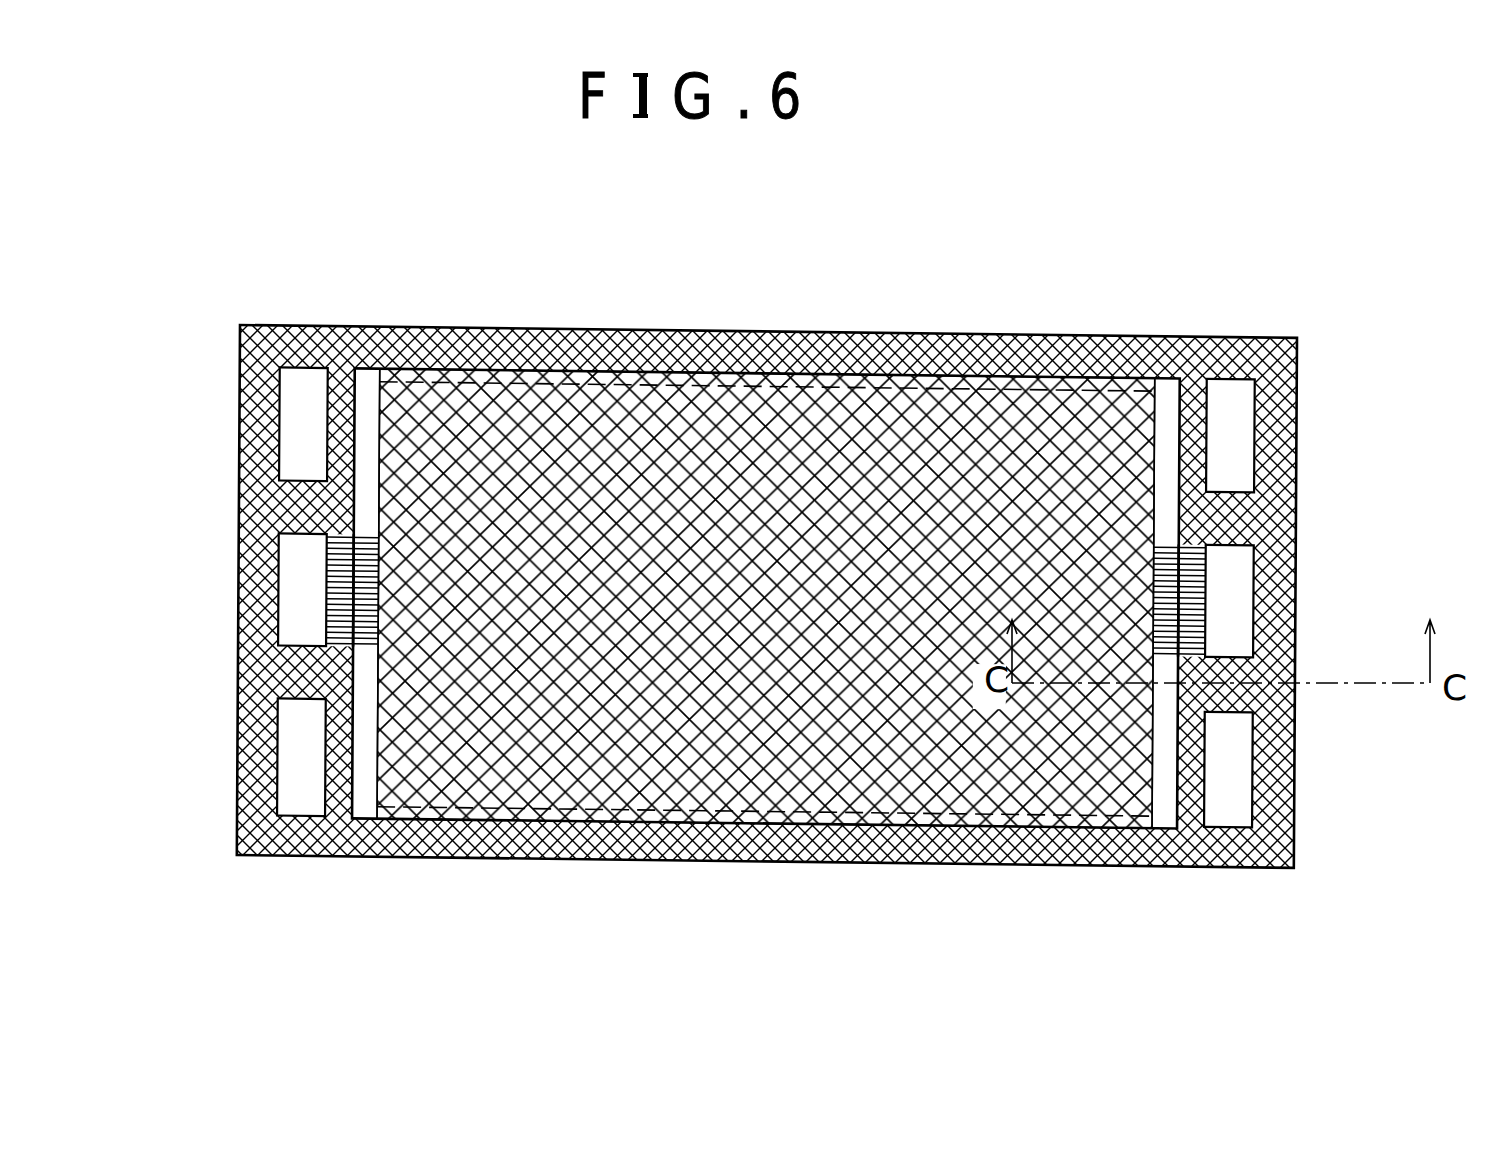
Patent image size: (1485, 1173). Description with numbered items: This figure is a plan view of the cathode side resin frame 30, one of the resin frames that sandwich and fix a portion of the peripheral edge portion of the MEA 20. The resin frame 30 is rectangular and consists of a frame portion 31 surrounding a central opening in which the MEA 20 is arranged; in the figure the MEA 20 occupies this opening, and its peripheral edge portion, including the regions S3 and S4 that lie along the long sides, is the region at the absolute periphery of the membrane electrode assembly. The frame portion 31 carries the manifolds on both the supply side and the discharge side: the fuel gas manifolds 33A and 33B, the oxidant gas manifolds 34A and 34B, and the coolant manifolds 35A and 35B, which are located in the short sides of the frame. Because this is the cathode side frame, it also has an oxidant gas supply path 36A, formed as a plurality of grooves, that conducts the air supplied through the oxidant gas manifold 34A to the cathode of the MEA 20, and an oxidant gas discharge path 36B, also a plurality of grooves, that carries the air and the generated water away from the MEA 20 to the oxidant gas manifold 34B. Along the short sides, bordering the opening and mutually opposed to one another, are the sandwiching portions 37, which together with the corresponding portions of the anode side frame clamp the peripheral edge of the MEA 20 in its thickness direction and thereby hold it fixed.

The resin frame 30 is at (951, 312).
The frame portion 31 is at (858, 836).
The MEA 20 is at (667, 797).
The sandwiching portions 37 is at (378, 422).
The peripheral edge portion region S3 is at (733, 386).
The peripheral edge portion region S4 is at (1043, 816).
The fuel gas manifold 33A is at (302, 406).
The fuel gas manifold 33B is at (1235, 416).
The oxidant gas manifold 34A is at (300, 563).
The oxidant gas manifold 34B is at (1235, 574).
The coolant manifold 35A is at (300, 781).
The coolant manifold 35B is at (1235, 743).
The oxidant gas supply path 36A is at (330, 510).
The oxidant gas discharge path 36B is at (1208, 518).